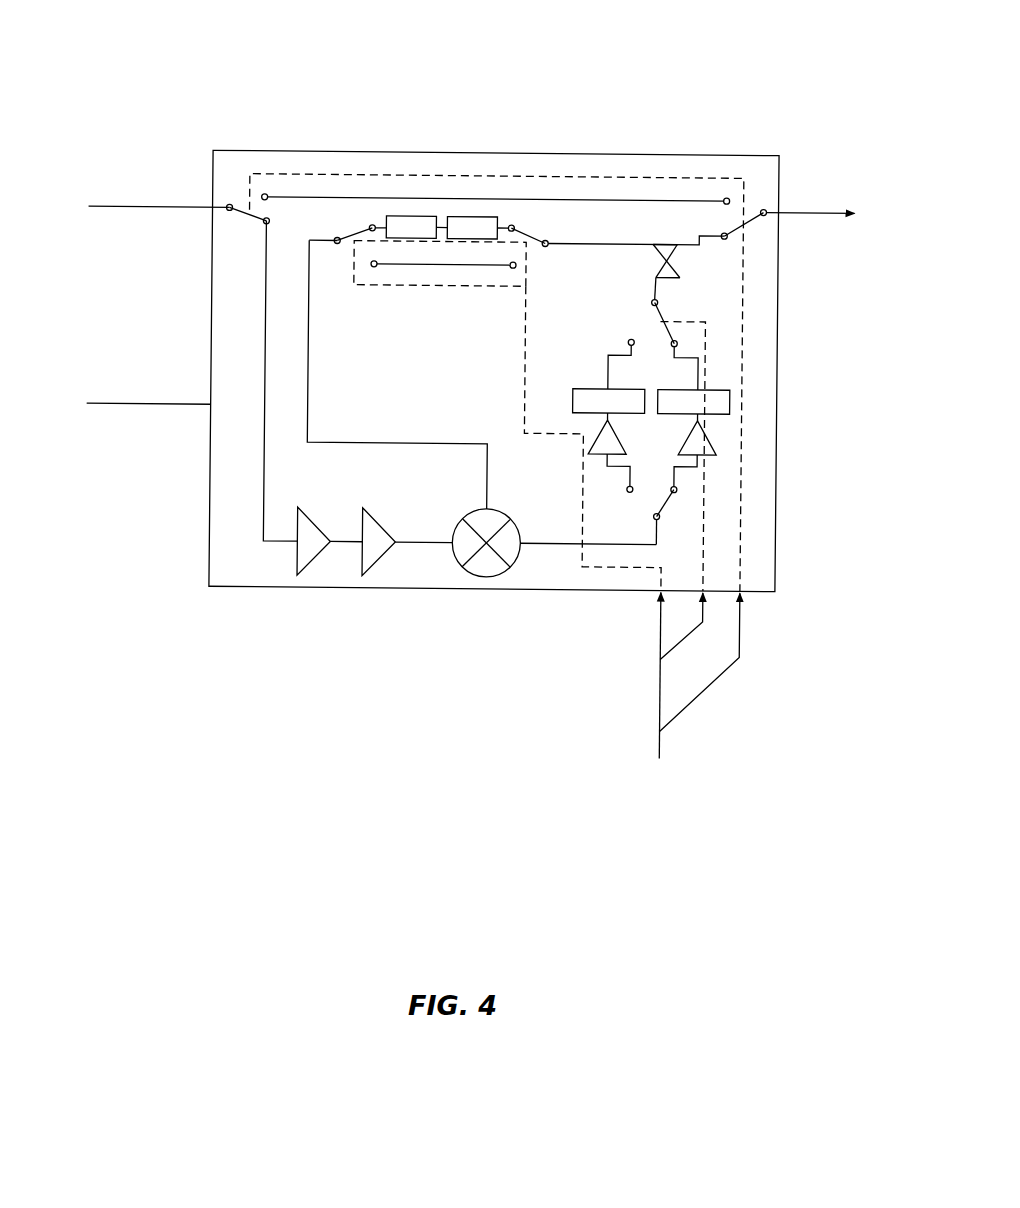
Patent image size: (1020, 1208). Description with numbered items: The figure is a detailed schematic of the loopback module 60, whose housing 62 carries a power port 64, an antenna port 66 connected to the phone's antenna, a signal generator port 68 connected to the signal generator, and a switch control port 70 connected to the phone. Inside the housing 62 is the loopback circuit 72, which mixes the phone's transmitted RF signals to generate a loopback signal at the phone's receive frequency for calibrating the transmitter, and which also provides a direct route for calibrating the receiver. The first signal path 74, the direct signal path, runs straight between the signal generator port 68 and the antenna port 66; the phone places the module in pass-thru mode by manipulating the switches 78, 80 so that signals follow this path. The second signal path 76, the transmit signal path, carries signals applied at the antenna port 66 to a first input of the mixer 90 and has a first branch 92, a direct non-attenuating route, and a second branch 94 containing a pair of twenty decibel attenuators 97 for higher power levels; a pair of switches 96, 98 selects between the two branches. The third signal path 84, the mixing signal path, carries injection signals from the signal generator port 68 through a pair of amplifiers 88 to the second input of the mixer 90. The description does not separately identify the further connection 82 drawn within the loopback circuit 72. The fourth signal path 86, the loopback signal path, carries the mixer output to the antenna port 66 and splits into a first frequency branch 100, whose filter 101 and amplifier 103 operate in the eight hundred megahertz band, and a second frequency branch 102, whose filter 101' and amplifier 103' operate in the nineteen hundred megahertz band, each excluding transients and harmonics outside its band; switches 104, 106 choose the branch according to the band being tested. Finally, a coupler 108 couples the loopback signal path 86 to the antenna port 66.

The loopback module 60 is at (744, 94).
The housing 62 is at (778, 175).
The power port 64 is at (208, 407).
The antenna port 66 is at (782, 212).
The signal generator port 68 is at (207, 210).
The switch control port 70 is at (655, 598).
The loopback circuit 72 is at (438, 362).
The first signal path 74 is at (645, 199).
The second signal path 76 is at (557, 247).
The switch 78 is at (752, 222).
The switch 80 is at (245, 206).
The loop line 82 is at (314, 365).
The third signal path 84 is at (265, 405).
The fourth signal path 86 is at (563, 548).
The amplifiers 88 is at (378, 553).
The mixer 90 is at (478, 579).
The first branch 92 is at (477, 209).
The second branch 94 is at (400, 268).
The switch 96 is at (353, 232).
The 20 dB attenuators 97 is at (478, 239).
The switch 98 is at (538, 240).
The first branch 100 is at (601, 368).
The filter 101 is at (559, 393).
The filter 101' is at (748, 388).
The second branch 102 is at (715, 378).
The amplifier 103 is at (631, 450).
The amplifier 103' is at (756, 442).
The switch 104 is at (657, 511).
The switch 106 is at (664, 318).
The coupler 108 is at (672, 264).